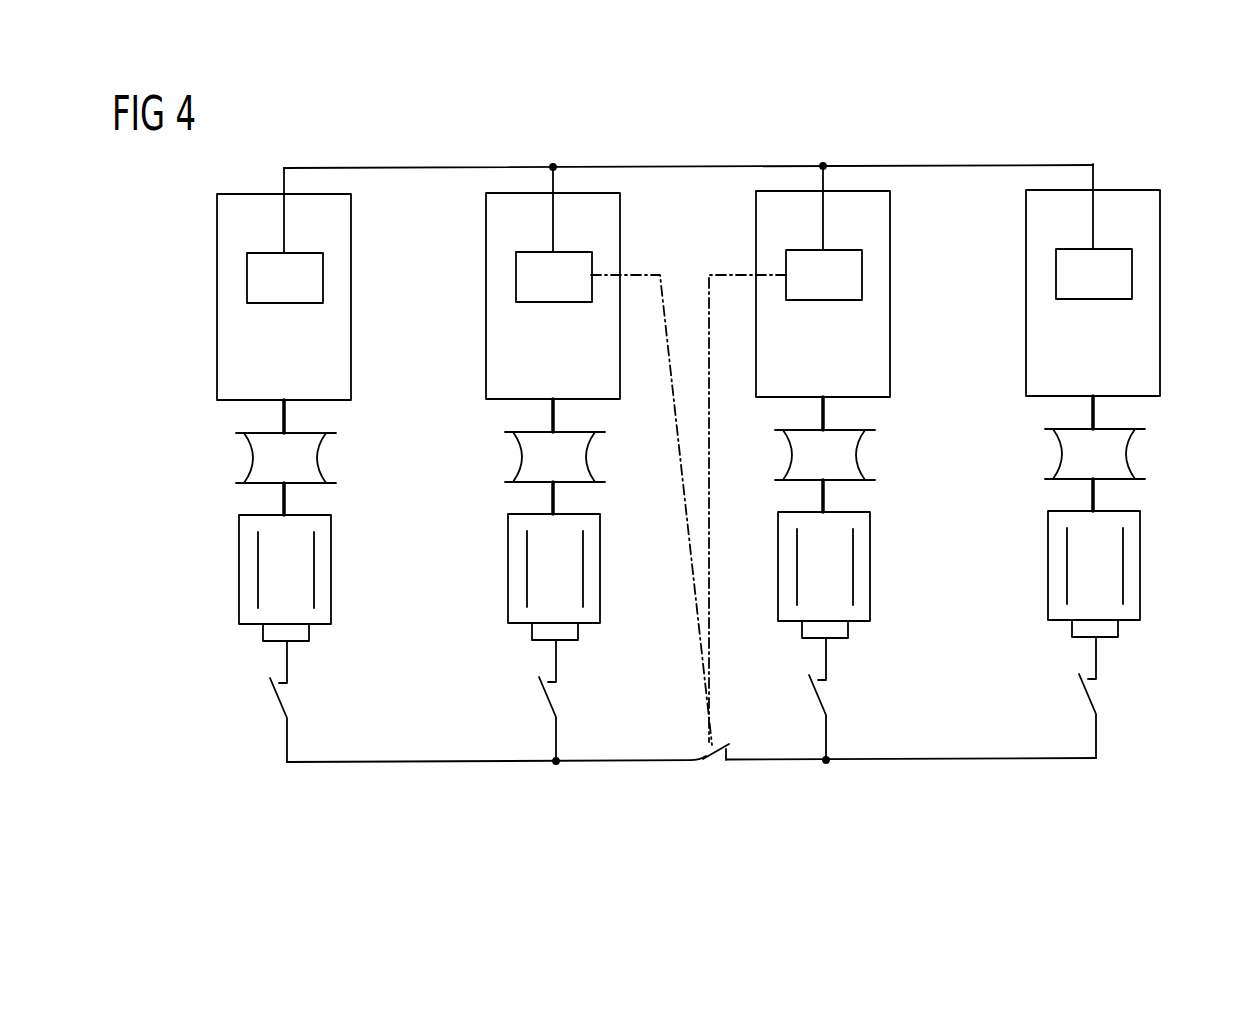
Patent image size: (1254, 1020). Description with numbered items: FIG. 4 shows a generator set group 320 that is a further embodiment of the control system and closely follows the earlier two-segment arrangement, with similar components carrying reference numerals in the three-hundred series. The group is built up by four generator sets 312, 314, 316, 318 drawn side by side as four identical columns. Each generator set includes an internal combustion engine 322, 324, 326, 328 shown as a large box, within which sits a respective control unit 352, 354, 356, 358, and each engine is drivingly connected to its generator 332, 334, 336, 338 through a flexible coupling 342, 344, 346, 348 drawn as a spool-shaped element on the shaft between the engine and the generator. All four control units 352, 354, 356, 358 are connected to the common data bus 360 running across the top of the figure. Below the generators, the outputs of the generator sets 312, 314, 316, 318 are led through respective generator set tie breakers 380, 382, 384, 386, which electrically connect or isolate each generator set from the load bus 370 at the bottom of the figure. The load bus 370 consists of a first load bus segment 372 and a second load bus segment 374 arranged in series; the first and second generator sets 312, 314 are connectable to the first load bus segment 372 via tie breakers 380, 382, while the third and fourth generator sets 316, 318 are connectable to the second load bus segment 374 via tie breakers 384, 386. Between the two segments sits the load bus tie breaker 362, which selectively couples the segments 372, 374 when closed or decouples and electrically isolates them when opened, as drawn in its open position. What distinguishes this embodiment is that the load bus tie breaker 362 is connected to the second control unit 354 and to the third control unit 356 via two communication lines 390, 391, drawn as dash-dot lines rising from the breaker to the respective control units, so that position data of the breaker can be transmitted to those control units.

The first generator set 312 is at (186, 252).
The second generator set 314 is at (456, 254).
The third generator set 316 is at (726, 253).
The fourth generator set 318 is at (997, 250).
The generator set group 320 is at (205, 543).
The first internal combustion engine 322 is at (352, 250).
The second internal combustion engine 324 is at (621, 248).
The third internal combustion engine 326 is at (892, 248).
The fourth internal combustion engine 328 is at (1160, 245).
The first generator 332 is at (318, 628).
The second generator 334 is at (588, 628).
The third generator 336 is at (858, 625).
The fourth generator 338 is at (1126, 623).
The first flexible coupling 342 is at (243, 458).
The second flexible coupling 344 is at (512, 456).
The third flexible coupling 346 is at (782, 455).
The fourth flexible coupling 348 is at (1052, 452).
The first control unit 352 is at (283, 305).
The second control unit 354 is at (553, 304).
The third control unit 356 is at (823, 302).
The fourth control unit 358 is at (1093, 300).
The common data bus 360 is at (651, 166).
The load bus tie breaker 362 is at (712, 764).
The load bus 370 is at (650, 785).
The first load bus segment 372 is at (392, 765).
The second load bus segment 374 is at (907, 761).
The first generator set tie breaker 380 is at (274, 702).
The second generator set tie breaker 382 is at (545, 700).
The third generator set tie breaker 384 is at (815, 700).
The fourth generator set tie breaker 386 is at (1083, 698).
The communication line 390 is at (714, 660).
The communication line 391 is at (692, 592).